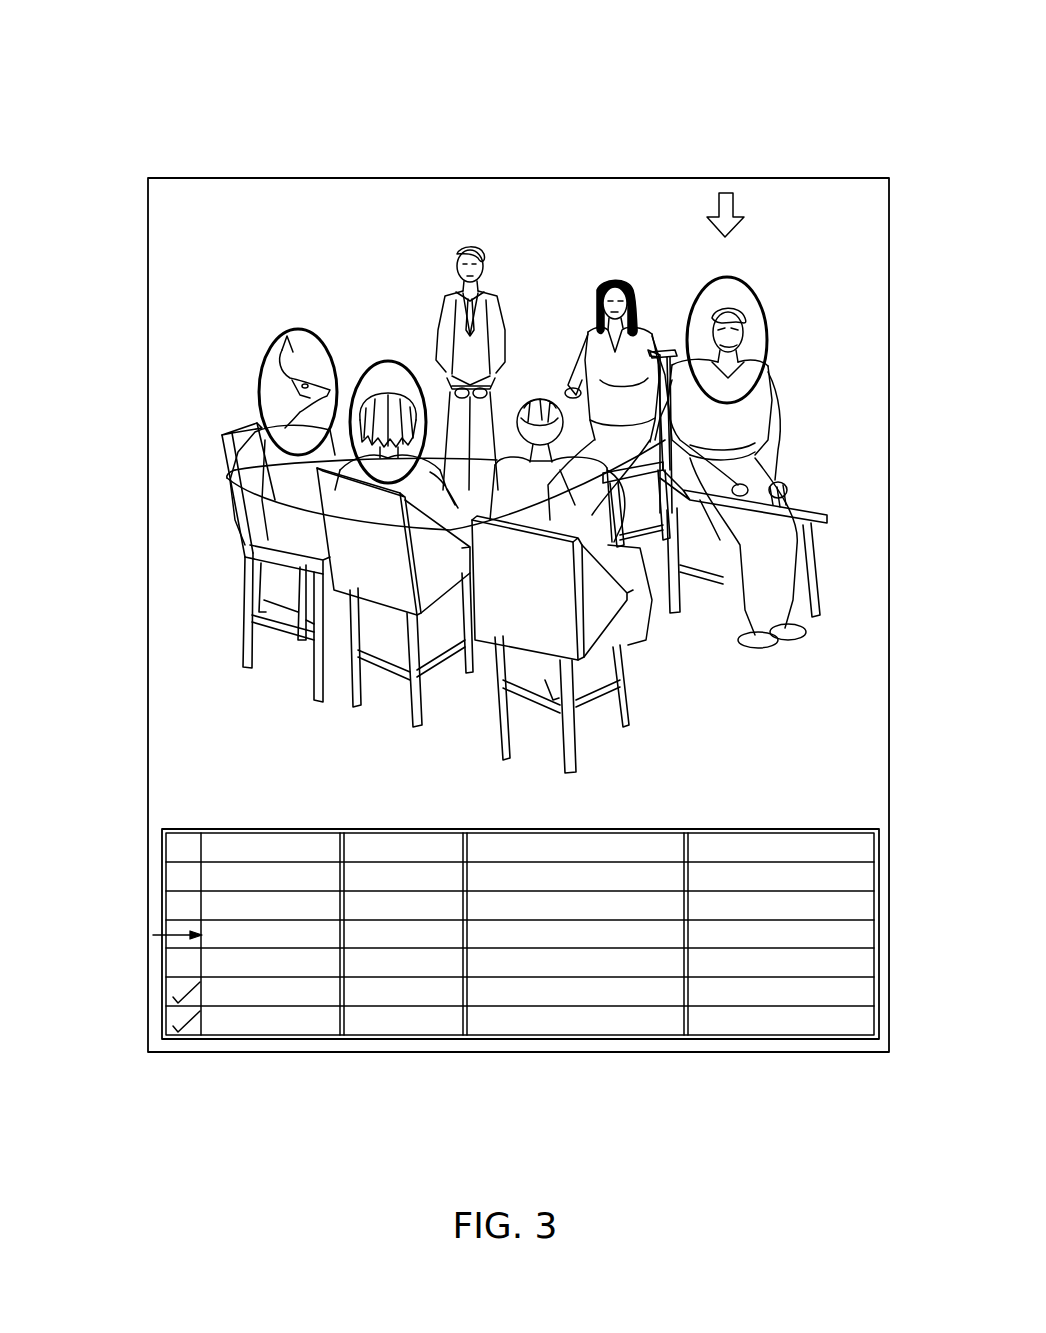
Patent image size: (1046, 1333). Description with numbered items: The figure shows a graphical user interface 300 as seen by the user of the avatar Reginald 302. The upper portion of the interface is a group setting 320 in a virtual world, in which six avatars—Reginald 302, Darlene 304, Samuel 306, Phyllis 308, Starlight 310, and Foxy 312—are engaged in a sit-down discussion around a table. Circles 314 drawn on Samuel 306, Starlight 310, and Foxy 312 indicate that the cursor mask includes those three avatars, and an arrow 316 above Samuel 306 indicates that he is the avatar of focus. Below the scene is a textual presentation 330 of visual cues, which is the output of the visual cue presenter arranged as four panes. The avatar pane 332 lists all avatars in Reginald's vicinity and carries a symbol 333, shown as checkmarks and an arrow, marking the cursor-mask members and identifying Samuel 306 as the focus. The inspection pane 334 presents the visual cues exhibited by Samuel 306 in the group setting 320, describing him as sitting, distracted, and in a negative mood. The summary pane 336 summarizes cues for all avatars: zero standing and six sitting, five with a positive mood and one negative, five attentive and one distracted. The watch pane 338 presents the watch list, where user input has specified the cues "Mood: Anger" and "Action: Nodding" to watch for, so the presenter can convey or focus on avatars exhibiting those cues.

The graphical user interface 300 is at (823, 24).
The Reginald 302 is at (478, 218).
The Darlene 304 is at (612, 243).
The Samuel 306 is at (758, 245).
The Phyllis 308 is at (540, 365).
The Starlight 310 is at (385, 320).
The Foxy 312 is at (300, 292).
The circles 314 is at (320, 508).
The arrow 316 is at (727, 185).
The group setting 320 is at (143, 178).
The textual presentation 330 is at (143, 830).
The avatar pane 332 is at (268, 1038).
The symbol 333 is at (160, 940).
The inspection pane 334 is at (398, 1038).
The summary pane 336 is at (573, 1038).
The watch pane 338 is at (788, 1038).